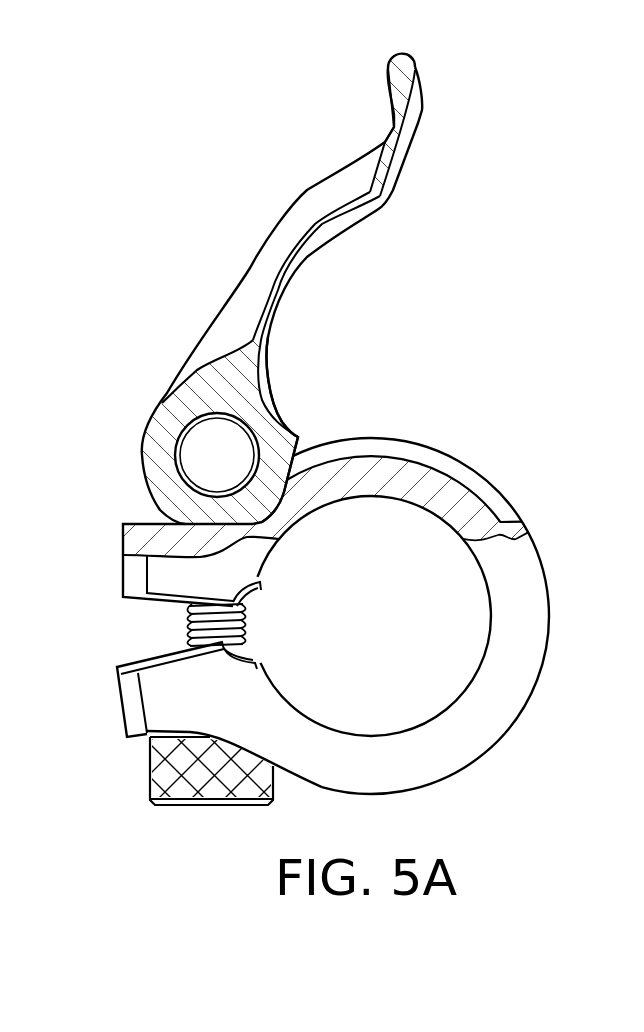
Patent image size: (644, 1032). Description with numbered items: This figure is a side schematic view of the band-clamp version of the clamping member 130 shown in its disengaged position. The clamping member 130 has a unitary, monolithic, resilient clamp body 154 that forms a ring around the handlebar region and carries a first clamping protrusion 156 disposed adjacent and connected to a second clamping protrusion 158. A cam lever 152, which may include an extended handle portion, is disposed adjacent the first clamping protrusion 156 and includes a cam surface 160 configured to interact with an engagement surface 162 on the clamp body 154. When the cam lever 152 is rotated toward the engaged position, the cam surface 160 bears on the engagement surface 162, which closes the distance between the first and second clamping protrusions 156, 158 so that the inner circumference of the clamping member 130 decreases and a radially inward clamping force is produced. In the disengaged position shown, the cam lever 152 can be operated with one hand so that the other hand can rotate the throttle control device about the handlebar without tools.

The clamping member 130 is at (549, 741).
The cam lever 152 is at (255, 247).
The clamp body 154 is at (545, 562).
The first clamping protrusion 156 is at (122, 572).
The second clamping protrusion 158 is at (118, 705).
The cam surface 160 is at (298, 437).
The engagement surface 162 is at (284, 498).